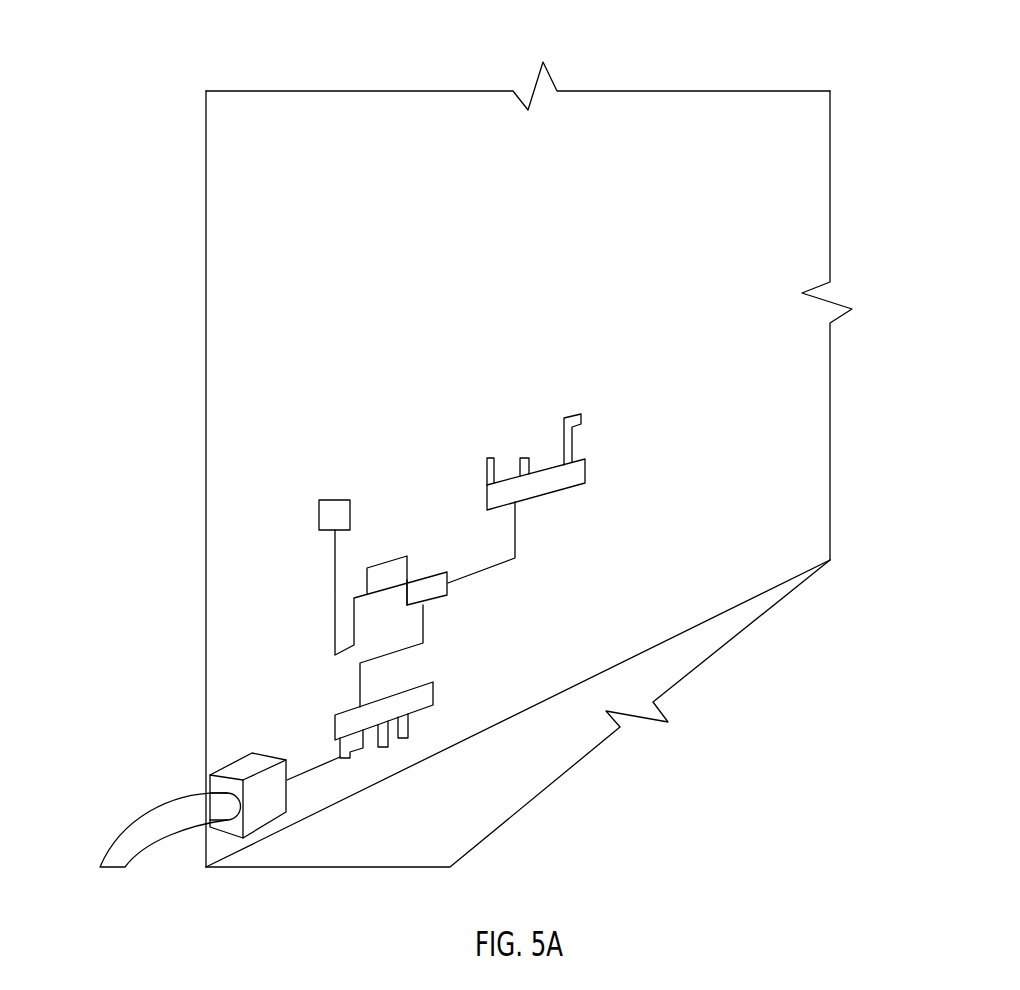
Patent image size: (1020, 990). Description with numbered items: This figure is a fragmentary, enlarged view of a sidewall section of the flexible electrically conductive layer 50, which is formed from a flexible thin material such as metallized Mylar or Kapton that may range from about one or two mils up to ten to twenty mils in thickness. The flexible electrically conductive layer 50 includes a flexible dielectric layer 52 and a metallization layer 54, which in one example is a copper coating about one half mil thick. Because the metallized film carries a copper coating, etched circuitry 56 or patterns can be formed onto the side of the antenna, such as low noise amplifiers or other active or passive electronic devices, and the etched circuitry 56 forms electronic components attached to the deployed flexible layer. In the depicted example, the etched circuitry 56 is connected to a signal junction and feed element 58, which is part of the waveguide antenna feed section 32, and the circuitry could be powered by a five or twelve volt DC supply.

The waveguide antenna feed section 32 is at (153, 393).
The flexible electrically conductive layer 50 is at (626, 154).
The flexible dielectric layer 52 is at (753, 445).
The metallization layer 54 is at (562, 505).
The etched circuitry 56 is at (351, 516).
The signal junction and feed element 58 is at (216, 784).